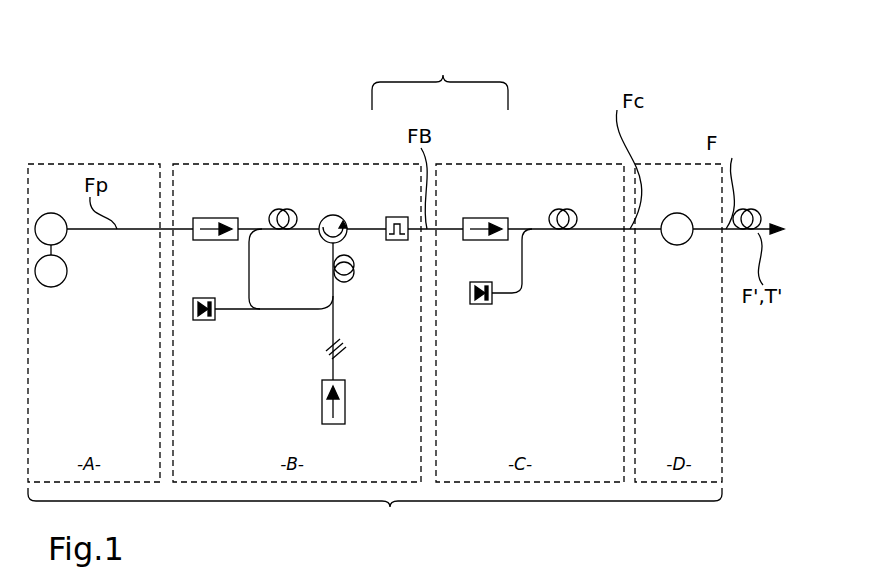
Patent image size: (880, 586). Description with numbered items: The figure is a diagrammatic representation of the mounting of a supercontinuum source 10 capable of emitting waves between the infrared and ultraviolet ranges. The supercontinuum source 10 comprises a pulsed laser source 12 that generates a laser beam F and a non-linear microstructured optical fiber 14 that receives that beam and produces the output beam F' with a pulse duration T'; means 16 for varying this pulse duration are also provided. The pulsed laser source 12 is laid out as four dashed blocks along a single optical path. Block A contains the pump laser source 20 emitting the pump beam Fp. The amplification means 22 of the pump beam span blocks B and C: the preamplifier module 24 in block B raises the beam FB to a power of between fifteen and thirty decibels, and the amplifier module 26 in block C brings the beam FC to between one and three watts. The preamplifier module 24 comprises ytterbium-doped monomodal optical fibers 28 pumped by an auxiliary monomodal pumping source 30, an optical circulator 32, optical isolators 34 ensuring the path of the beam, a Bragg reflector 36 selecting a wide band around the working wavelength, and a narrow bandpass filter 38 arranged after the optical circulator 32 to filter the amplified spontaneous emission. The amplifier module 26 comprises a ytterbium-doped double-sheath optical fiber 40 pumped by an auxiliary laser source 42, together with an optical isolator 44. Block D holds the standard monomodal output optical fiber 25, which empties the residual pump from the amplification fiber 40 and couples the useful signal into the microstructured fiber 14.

The supercontinuum source 10 is at (272, 78).
The pulsed laser source 12 is at (375, 511).
The non-linear microstructured optical fiber 14 is at (751, 208).
The means for varying the pulse duration 16 is at (51, 266).
The pump laser source 20 is at (51, 229).
The amplification means 22 is at (440, 76).
The preamplifier module 24 is at (370, 162).
The output optical fiber 25 is at (677, 229).
The amplifier module 26 is at (508, 163).
The monomodal optical fiber 28 is at (333, 268).
The auxiliary monomodal pumping source 30 is at (196, 322).
The optical circulator 32 is at (333, 215).
The optical isolator 34 is at (212, 218).
The Bragg reflector 36 is at (336, 351).
The narrow bandpass filter 38 is at (395, 243).
The double-sheath optical fiber 40 is at (561, 209).
The auxiliary laser source 42 is at (483, 305).
The optical isolator 44 is at (488, 218).